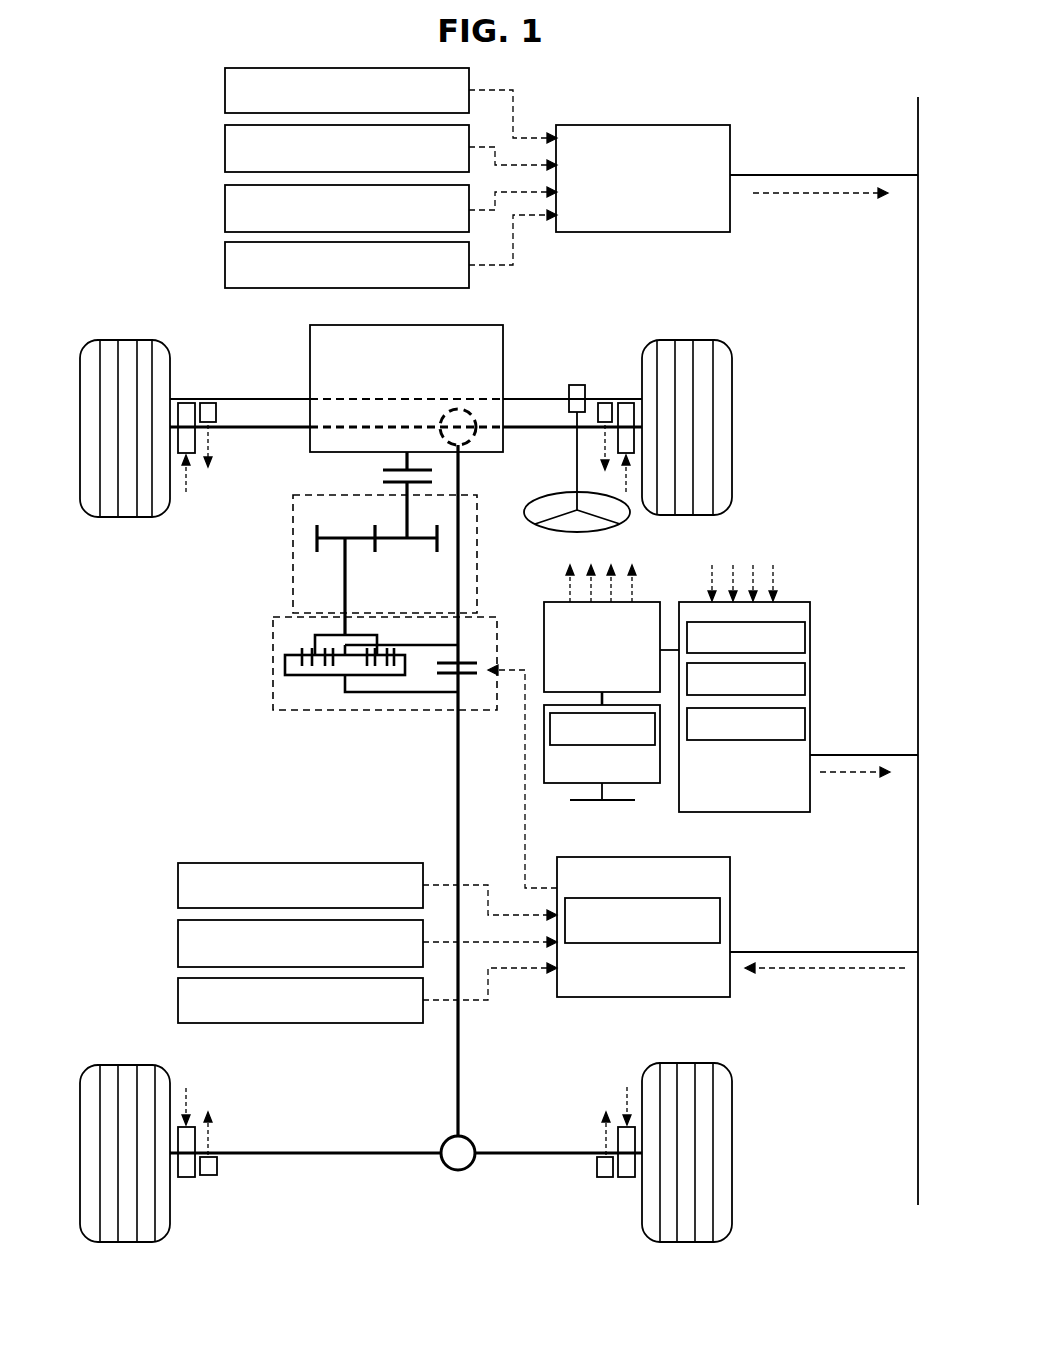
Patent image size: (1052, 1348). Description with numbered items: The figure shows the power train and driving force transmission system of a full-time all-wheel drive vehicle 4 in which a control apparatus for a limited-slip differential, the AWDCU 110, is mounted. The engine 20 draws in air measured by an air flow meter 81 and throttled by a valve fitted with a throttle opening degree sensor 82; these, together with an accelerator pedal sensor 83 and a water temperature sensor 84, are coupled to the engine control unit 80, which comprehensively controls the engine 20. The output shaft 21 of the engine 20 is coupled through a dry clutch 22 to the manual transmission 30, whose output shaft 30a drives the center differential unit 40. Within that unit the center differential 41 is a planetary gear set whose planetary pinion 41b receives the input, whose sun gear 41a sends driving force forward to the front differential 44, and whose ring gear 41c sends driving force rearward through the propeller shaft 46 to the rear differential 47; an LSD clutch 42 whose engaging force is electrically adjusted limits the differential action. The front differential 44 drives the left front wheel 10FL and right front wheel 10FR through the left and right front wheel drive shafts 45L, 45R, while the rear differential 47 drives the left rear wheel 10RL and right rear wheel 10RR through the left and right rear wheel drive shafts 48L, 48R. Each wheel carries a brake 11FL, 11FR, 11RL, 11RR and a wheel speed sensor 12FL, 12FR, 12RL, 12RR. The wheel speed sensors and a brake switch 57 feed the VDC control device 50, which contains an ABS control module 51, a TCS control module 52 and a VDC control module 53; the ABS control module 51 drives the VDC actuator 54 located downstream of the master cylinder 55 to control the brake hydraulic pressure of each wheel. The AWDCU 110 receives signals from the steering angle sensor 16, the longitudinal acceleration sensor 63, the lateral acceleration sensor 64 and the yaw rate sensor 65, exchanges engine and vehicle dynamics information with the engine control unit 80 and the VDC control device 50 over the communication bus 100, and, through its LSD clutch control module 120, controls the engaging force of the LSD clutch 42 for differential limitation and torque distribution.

The AWD vehicle 4 is at (106, 232).
The air flow meter 81 is at (225, 90).
The throttle opening degree sensor 82 is at (225, 148).
The accelerator pedal sensor 83 is at (225, 206).
The water temperature sensor 84 is at (225, 264).
The engine control unit 80 is at (730, 145).
The communication bus 100 is at (918, 1195).
The left front wheel 10FL is at (127, 340).
The right front wheel 10FR is at (687, 340).
The left rear wheel 10RL is at (127, 1242).
The right rear wheel 10RR is at (687, 1242).
The brake 11FL is at (186, 403).
The brake 11FR is at (630, 403).
The brake 11RL is at (186, 1177).
The brake 11RR is at (625, 1177).
The wheel speed sensor 12FL is at (208, 403).
The wheel speed sensor 12FR is at (603, 403).
The wheel speed sensor 12RL is at (208, 1176).
The wheel speed sensor 12RR is at (603, 1177).
The left front wheel drive shaft 45L is at (277, 425).
The right front wheel drive shaft 45R is at (540, 425).
The engine 20 is at (310, 350).
The output shaft 21 is at (405, 460).
The dry clutch 22 is at (372, 482).
The manual transmission 30 is at (293, 555).
The output shaft 30a is at (345, 597).
The center differential unit 40 is at (273, 650).
The center differential 41 is at (355, 682).
The sun gear 41a is at (345, 668).
The planetary pinion 41b is at (318, 668).
The ring gear 41c is at (282, 661).
The LSD clutch 42 is at (450, 680).
The front differential 44 is at (458, 409).
The propeller shaft 46 is at (458, 1063).
The rear differential 47 is at (445, 1141).
The left rear wheel drive shaft 48L is at (277, 1150).
The right rear wheel drive shaft 48R is at (540, 1150).
The steering angle sensor 16 is at (575, 385).
The VDC actuator 54 is at (544, 620).
The master cylinder 55 is at (544, 770).
The brake switch 57 is at (550, 730).
The VDC control device 50 is at (790, 600).
The ABS control module 51 is at (805, 637).
The TCS control module 52 is at (805, 682).
The VDC control module 53 is at (805, 725).
The longitudinal acceleration sensor 63 is at (178, 888).
The lateral acceleration sensor 64 is at (178, 943).
The yaw rate sensor 65 is at (178, 1000).
The control apparatus for limited-slip differential 110 is at (640, 997).
The LSD clutch control module 120 is at (720, 917).